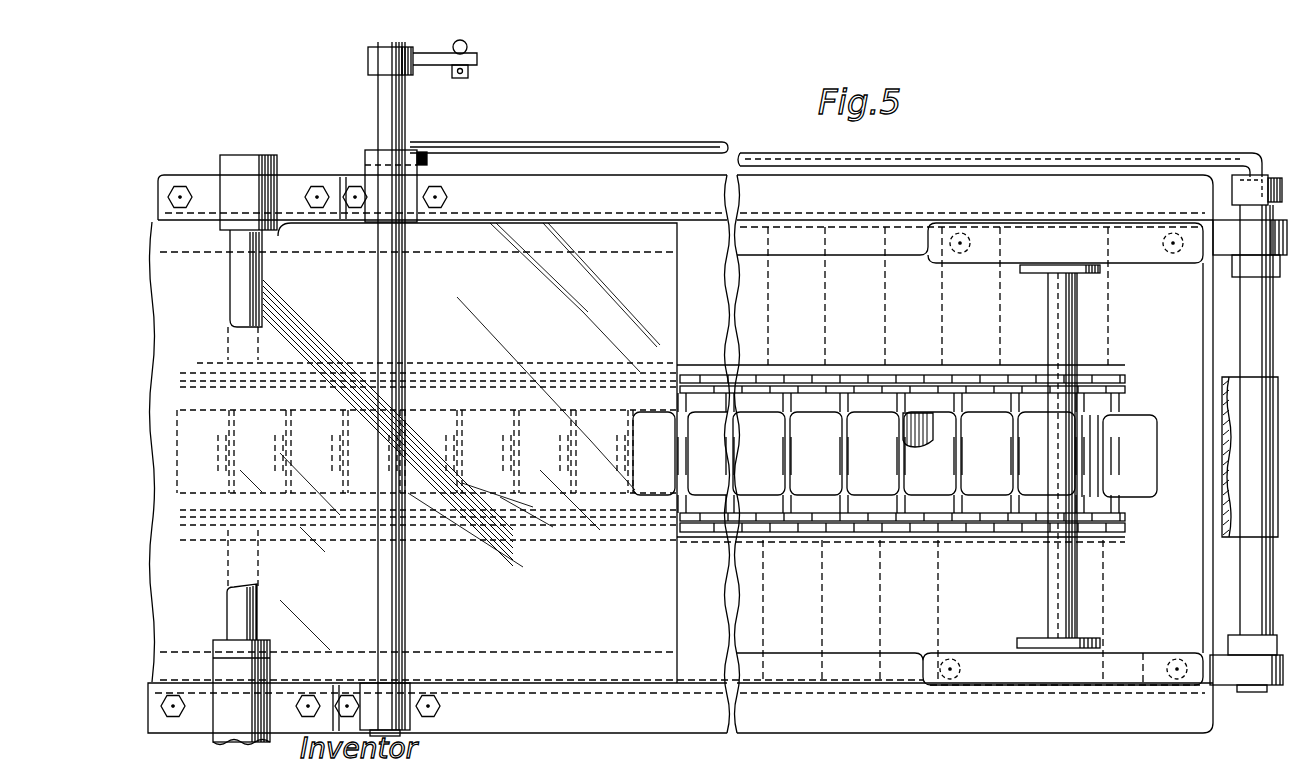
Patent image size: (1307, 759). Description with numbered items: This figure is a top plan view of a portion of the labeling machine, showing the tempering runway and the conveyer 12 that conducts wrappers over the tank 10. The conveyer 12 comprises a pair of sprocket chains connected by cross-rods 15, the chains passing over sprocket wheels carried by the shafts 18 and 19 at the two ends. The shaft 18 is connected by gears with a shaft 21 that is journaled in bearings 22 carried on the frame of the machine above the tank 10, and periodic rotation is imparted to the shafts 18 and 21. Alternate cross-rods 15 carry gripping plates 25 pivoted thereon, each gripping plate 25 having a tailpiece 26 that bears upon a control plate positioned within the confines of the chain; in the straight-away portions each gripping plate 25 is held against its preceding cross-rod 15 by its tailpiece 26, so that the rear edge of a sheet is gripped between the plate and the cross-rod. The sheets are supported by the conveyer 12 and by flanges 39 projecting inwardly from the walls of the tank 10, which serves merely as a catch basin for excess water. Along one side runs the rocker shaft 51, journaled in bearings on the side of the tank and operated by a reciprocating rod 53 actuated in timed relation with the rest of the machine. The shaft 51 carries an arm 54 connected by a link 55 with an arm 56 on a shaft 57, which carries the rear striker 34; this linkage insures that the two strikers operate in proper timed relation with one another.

The tank 10 is at (823, 692).
The conveyer 12 is at (908, 530).
The cross-rods 15 is at (897, 505).
The shaft 18 is at (262, 345).
The shaft 19 is at (1077, 597).
The shaft 21 is at (262, 273).
The bearings 22 is at (275, 160).
The gripping plates 25 is at (802, 485).
The tailpieces 26 is at (903, 428).
The rear striker 34 is at (1237, 525).
The flanges 39 is at (793, 247).
The rocker shaft 51 is at (405, 112).
The reciprocating rod 53 is at (468, 47).
The arm 54 is at (428, 160).
The link 55 is at (1043, 147).
The arm 56 is at (1265, 175).
The shaft 57 is at (1273, 585).